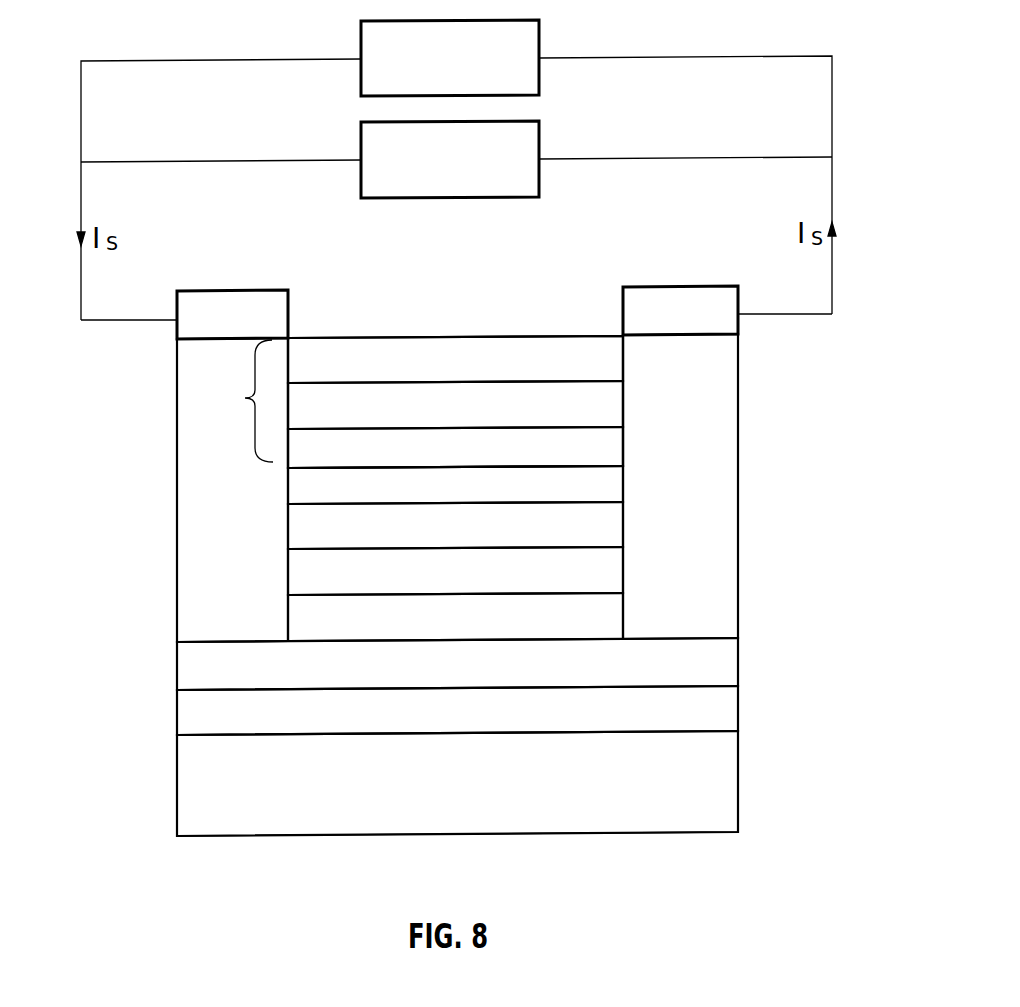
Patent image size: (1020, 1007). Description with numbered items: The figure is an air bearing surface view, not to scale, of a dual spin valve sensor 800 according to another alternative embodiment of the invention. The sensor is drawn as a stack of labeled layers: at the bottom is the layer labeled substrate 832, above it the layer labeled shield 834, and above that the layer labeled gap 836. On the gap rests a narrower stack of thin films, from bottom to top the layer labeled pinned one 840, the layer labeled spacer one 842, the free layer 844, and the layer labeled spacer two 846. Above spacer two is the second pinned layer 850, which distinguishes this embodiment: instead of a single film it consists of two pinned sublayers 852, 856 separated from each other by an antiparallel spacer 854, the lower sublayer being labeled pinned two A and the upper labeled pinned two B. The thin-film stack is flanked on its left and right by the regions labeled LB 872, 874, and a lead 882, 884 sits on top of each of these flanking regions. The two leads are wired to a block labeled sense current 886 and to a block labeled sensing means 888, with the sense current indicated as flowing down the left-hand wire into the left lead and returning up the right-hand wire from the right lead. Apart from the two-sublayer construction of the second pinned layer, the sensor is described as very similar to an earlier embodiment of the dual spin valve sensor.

The dual spin valve sensor 800 is at (150, 917).
The substrate 832 is at (217, 788).
The shield layer 834 is at (213, 720).
The gap layer 836 is at (207, 673).
The first pinned layer (PINNED 1) 840 is at (327, 613).
The first spacer layer (SPACER 1) 842 is at (308, 577).
The free layer 844 is at (310, 530).
The second spacer layer (SPACER 2) 846 is at (313, 488).
The second pinned layer 850 is at (243, 397).
The pinned sublayer 852 is at (595, 447).
The antiparallel spacer 854 is at (605, 405).
The pinned sublayer 856 is at (605, 363).
The left longitudinal bias layer 872 is at (200, 356).
The right longitudinal bias layer 874 is at (727, 343).
The left lead 882 is at (273, 315).
The right lead 884 is at (623, 312).
The sense current source 886 is at (539, 82).
The sensing means 888 is at (361, 135).